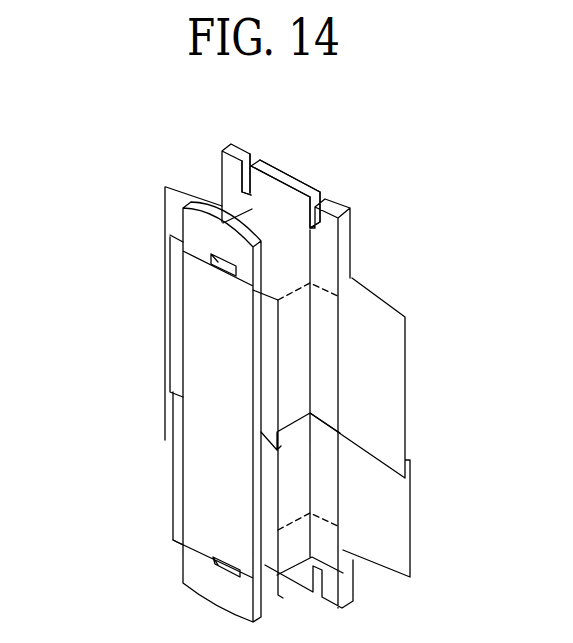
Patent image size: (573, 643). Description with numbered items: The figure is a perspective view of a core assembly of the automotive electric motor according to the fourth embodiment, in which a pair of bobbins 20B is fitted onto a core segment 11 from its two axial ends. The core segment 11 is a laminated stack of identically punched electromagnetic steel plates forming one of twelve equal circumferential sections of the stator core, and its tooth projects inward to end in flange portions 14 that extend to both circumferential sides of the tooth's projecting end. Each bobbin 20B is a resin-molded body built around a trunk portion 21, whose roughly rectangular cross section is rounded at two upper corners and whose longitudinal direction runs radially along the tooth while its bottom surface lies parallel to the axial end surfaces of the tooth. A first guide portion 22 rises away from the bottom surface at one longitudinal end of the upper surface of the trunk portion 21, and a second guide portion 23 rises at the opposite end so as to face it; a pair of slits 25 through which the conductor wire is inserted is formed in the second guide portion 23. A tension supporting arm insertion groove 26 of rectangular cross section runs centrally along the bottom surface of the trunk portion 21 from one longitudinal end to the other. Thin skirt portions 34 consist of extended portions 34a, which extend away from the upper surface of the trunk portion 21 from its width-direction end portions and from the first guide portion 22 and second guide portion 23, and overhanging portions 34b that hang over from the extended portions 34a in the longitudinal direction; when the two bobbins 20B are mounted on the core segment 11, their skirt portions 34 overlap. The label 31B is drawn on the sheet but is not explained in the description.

The core segment 11 is at (212, 469).
The flange portion 14 is at (190, 373).
The bobbin 20B is at (355, 210).
The trunk portion 21 is at (250, 225).
The first guide portion 22 is at (193, 228).
The second guide portion 23 is at (288, 180).
The slit 25 is at (251, 153).
The tension supporting arm insertion groove 26 is at (214, 275).
The assembly 31B is at (474, 125).
The skirt portion 34 is at (301, 362).
The extended portion 34a is at (302, 338).
The overhanging portion 34b is at (272, 369).